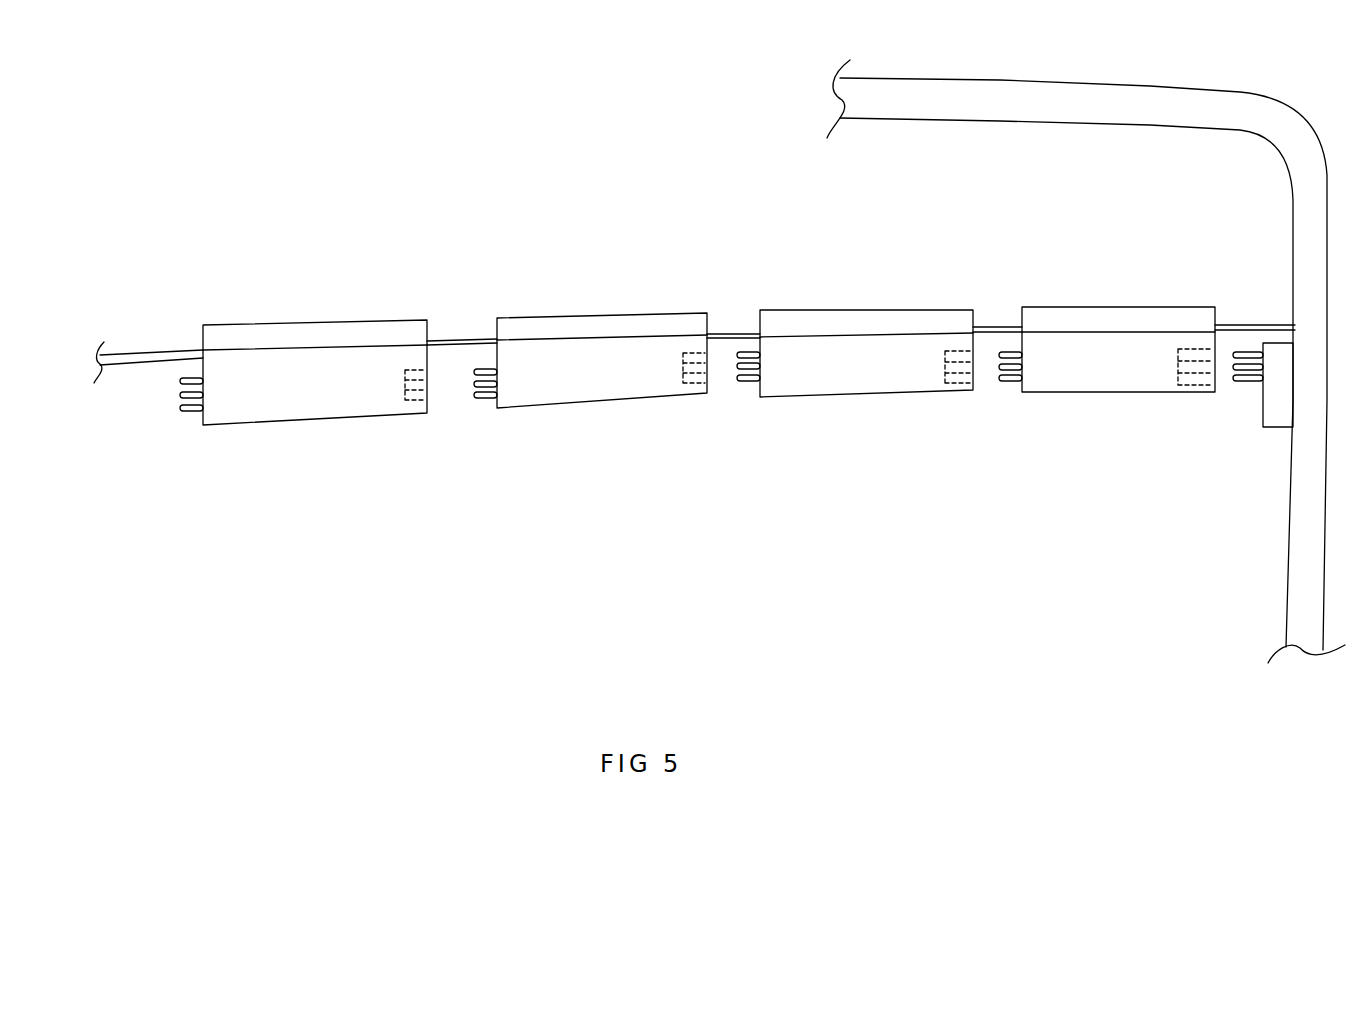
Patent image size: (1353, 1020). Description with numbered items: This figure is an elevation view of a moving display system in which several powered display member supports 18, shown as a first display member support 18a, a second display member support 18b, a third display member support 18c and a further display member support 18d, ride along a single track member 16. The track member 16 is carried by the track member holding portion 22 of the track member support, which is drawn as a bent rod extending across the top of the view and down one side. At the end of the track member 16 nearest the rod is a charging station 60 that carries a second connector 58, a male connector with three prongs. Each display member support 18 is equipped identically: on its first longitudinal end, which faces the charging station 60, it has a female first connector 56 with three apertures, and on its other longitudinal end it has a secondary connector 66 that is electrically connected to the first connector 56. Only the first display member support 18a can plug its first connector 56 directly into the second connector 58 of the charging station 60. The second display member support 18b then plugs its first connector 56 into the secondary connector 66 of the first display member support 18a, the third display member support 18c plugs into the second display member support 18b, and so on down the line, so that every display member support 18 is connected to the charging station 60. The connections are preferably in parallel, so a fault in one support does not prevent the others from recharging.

The track member 16 is at (452, 338).
The display member support 18 is at (709, 339).
The first display member support 18a is at (1078, 307).
The second display member support 18b is at (808, 310).
The third display member support 18c is at (548, 318).
The fourth module 18d is at (243, 323).
The track member holding portion 22 is at (991, 120).
The first connector 56 is at (395, 397).
The second connector 58 is at (1243, 392).
The charging station 60 is at (1263, 420).
The secondary connector 66 is at (183, 422).